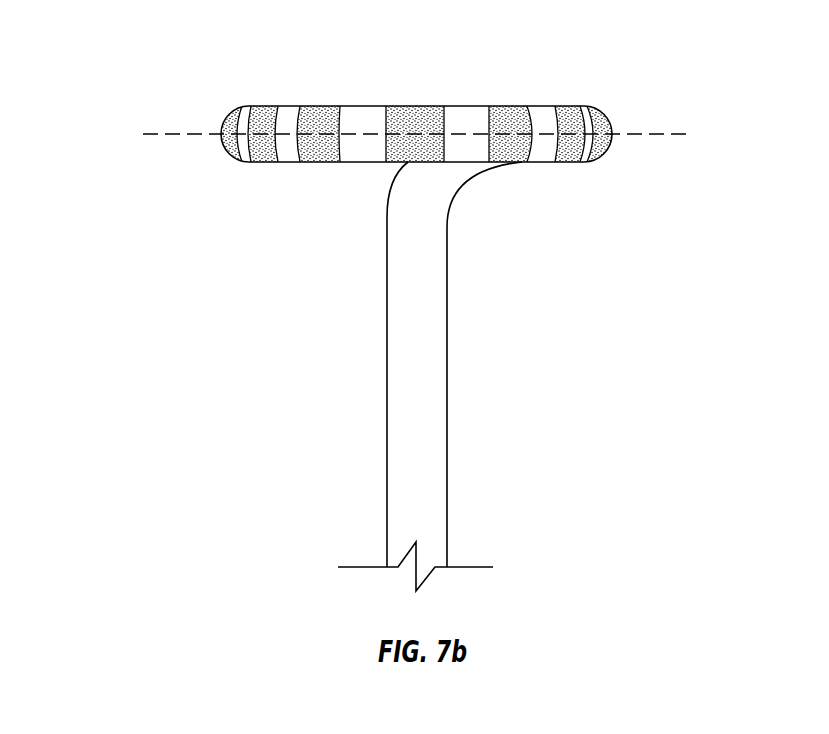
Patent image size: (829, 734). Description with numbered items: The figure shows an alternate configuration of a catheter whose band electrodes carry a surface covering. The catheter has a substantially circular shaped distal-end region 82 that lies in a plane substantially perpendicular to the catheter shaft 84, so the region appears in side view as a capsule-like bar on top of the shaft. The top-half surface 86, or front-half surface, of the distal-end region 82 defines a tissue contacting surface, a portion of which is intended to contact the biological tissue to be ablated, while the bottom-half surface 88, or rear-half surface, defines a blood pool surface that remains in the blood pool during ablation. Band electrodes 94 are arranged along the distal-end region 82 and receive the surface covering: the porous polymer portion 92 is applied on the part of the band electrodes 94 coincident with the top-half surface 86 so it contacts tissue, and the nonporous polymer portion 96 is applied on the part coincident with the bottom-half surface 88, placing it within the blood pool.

The distal-end region 82 is at (366, 137).
The catheter shaft 84 is at (383, 345).
The top-half surface 86 is at (580, 103).
The bottom-half surface 88 is at (577, 170).
The porous polymer portion 92 is at (322, 114).
The band electrodes 94 is at (415, 114).
The nonporous polymer portion 96 is at (322, 156).